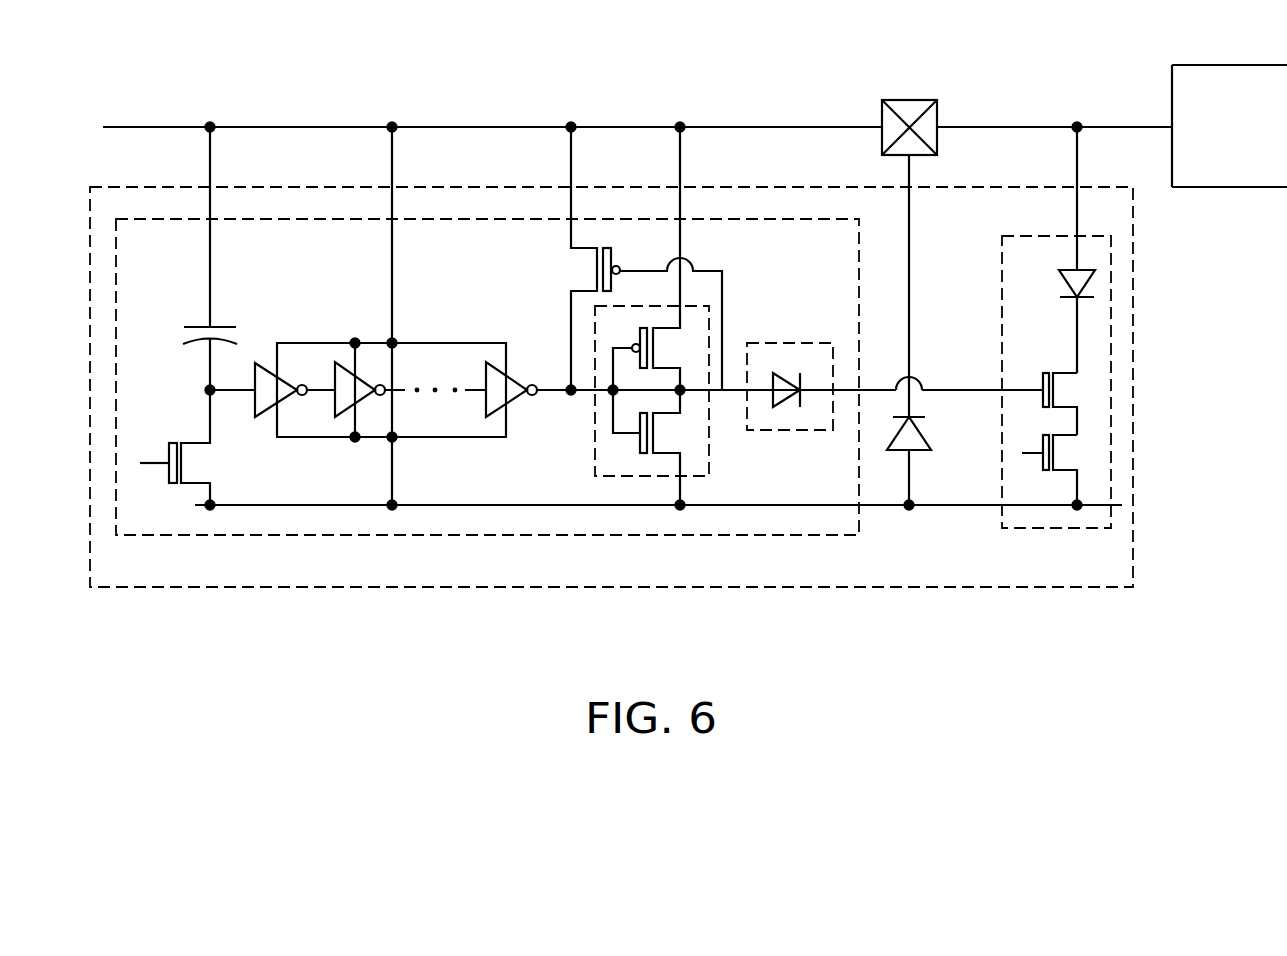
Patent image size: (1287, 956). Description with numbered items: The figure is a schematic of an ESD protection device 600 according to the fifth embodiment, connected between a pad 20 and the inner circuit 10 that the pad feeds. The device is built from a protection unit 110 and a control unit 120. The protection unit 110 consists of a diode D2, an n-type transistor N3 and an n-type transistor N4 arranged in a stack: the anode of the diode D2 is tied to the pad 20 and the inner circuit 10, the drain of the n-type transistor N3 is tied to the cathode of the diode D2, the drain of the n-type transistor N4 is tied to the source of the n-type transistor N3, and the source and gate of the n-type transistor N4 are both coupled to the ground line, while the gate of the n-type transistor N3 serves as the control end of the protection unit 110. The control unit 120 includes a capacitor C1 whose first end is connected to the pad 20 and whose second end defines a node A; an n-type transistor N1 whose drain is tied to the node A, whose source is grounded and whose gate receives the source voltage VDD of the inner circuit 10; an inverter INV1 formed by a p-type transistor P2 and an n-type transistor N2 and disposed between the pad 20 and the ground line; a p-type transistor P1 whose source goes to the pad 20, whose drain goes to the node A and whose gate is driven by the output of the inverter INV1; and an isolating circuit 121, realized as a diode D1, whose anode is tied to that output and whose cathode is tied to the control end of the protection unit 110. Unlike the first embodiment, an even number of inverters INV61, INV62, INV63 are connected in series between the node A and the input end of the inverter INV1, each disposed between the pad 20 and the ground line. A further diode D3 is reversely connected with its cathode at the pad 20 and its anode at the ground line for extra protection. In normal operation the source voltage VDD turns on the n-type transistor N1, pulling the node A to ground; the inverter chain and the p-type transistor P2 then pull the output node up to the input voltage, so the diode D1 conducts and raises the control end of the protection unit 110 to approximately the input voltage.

The inner circuit 10 is at (1237, 190).
The pad 20 is at (909, 100).
The ESD protection device 600 is at (1133, 438).
The control unit 120 is at (860, 520).
The protection unit 110 is at (1030, 528).
The isolating circuit 121 is at (790, 349).
The capacitor C1 is at (194, 258).
The node A is at (201, 391).
The source voltage VDD is at (148, 446).
The n-type transistor N1 is at (176, 447).
The inverter INV61 is at (263, 418).
The inverter INV62 is at (362, 400).
The inverter INV63 is at (513, 395).
The p-type transistor P1 is at (634, 258).
The p-type transistor P2 is at (655, 280).
The n-type transistor N2 is at (668, 447).
The inverter INV1 is at (701, 316).
The diode D1 is at (790, 376).
The diode D3 is at (927, 461).
The diode D2 is at (1060, 250).
The n-type transistor N3 is at (1072, 404).
The n-type transistor N4 is at (1062, 470).